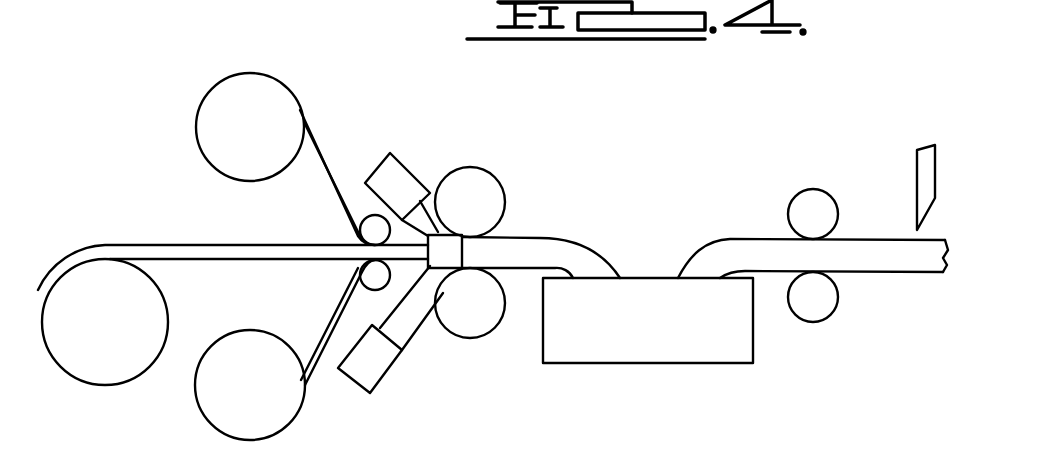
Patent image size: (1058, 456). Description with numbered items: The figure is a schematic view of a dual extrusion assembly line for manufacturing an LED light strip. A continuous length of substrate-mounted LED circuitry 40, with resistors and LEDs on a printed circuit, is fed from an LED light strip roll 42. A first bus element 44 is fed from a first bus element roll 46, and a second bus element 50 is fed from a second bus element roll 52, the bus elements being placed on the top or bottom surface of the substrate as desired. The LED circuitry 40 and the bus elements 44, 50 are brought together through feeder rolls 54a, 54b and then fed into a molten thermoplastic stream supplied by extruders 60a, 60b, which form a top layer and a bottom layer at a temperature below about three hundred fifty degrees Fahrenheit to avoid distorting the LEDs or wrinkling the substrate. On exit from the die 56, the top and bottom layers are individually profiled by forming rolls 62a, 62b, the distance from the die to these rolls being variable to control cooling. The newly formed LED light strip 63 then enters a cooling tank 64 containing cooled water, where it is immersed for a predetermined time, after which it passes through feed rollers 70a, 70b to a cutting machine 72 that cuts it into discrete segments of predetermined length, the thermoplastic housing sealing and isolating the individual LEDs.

The substrate-mounted LED circuitry 40 is at (175, 244).
The LED light strip roll 42 is at (118, 335).
The first bus element 44 is at (317, 138).
The first bus element roll 46 is at (268, 139).
The second bus element 50 is at (340, 310).
The second bus element roll 52 is at (266, 397).
The feeder roll 54a is at (370, 230).
The feeder roll 54b is at (368, 275).
The die 56 is at (448, 258).
The extruder 60a is at (397, 173).
The extruder 60b is at (362, 373).
The forming roll 62a is at (485, 185).
The forming roll 62b is at (478, 327).
The LED light strip 63 is at (573, 253).
The cooling tank 64 is at (647, 343).
The feed roller 70a is at (800, 202).
The feed roller 70b is at (820, 310).
The cutting machine 72 is at (923, 163).